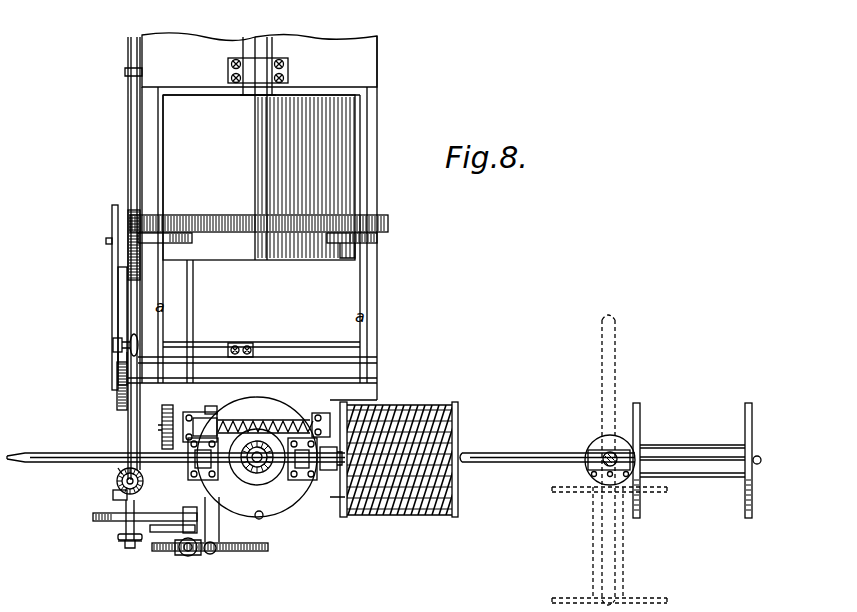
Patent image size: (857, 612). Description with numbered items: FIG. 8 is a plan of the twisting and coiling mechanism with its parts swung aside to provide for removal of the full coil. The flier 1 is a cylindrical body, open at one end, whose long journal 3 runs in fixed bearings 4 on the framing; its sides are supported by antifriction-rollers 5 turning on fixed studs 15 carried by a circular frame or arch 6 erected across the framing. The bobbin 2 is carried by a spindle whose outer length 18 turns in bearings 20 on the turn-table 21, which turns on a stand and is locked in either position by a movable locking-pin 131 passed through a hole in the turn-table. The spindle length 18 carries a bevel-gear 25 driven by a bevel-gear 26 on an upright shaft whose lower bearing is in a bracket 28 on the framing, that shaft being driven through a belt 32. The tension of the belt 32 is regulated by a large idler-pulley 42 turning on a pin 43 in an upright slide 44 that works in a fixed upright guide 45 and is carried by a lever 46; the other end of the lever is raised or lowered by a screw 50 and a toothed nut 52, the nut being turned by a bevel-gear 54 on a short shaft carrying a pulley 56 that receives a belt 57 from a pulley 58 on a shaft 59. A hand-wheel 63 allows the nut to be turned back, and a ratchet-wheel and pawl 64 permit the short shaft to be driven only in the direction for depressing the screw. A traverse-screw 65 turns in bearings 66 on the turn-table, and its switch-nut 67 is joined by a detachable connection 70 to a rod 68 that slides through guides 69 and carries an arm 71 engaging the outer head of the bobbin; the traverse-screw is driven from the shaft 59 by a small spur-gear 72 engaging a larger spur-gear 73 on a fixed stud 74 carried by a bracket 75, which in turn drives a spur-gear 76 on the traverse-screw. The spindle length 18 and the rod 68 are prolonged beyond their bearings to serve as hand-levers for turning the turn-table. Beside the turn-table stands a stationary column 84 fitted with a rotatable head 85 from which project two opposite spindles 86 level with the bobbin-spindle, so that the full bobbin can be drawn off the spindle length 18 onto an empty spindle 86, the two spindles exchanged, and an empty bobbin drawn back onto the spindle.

The flier 1 is at (259, 177).
The bobbin 2 is at (404, 472).
The long journal 3 is at (261, 45).
The fixed bearings 4 is at (258, 70).
The antifriction-rollers 5 is at (377, 240).
The circular frame or arch 6 is at (388, 224).
The fixed studs 15 is at (347, 258).
The spindle part 18 is at (60, 466).
The bearings 20 is at (250, 484).
The turn-table 21 is at (265, 485).
The bevel-gear 25 is at (252, 412).
The bevel-gear 26 is at (278, 412).
The bracket 28 is at (240, 360).
The belt 32 is at (120, 428).
The idler-pulley 42 is at (118, 308).
The pin 43 is at (114, 342).
The upright slide 44 is at (126, 347).
The fixed upright guide 45 is at (127, 366).
The lever 46 is at (128, 396).
The screw 50 is at (117, 484).
The nut 52 is at (143, 483).
The bevel-gear 54 is at (114, 494).
The pulley 56 is at (118, 540).
The belt 57 is at (93, 517).
The pulley 58 is at (180, 556).
The shaft 59 is at (210, 593).
The hand-wheel 63 is at (131, 548).
The ratchet-wheel and pawl 64 is at (140, 532).
The traverse-screw 65 is at (292, 420).
The bearings 66 is at (320, 412).
The switch-nut 67 is at (186, 412).
The rod 68 is at (72, 454).
The guides 69 is at (280, 478).
The connection 70 is at (215, 400).
The arm 71 is at (331, 475).
The small spur-gear 72 is at (188, 558).
The larger spur-gear 73 is at (255, 551).
The fixed stud 74 is at (213, 555).
The bracket 75 is at (219, 530).
The spur-gear 76 is at (160, 422).
The stationary column 84 is at (606, 450).
The rotatable head 85 is at (617, 453).
The spindles 86 is at (547, 446).
The locking-pin 131 is at (263, 518).